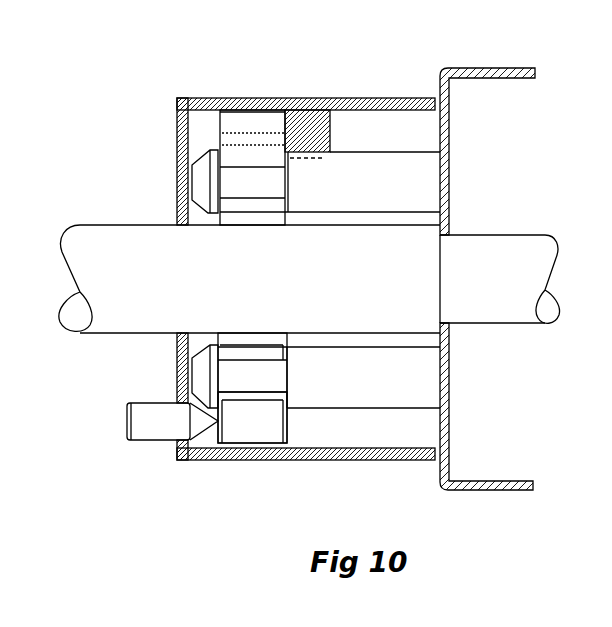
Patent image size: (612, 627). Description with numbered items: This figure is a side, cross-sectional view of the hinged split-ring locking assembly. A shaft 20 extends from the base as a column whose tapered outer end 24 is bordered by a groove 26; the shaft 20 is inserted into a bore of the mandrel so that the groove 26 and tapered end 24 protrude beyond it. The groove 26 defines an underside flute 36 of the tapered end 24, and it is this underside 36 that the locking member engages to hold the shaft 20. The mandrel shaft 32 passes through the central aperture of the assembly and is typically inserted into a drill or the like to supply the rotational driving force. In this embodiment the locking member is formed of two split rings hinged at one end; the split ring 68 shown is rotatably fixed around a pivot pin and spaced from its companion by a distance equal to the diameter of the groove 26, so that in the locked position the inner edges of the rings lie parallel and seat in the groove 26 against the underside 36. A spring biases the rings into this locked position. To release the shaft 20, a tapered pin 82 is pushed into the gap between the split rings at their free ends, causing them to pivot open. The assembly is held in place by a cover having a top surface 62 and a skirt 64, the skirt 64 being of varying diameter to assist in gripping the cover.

The shaft 20 is at (360, 177).
The tapered outer end 24 is at (203, 367).
The groove 26 is at (253, 162).
The mandrel shaft 32 is at (128, 248).
The underside flute 36 is at (223, 395).
The top surface 62 is at (177, 143).
The skirt 64 is at (410, 98).
The split ring 68 is at (270, 418).
The tapered pin 82 is at (150, 425).